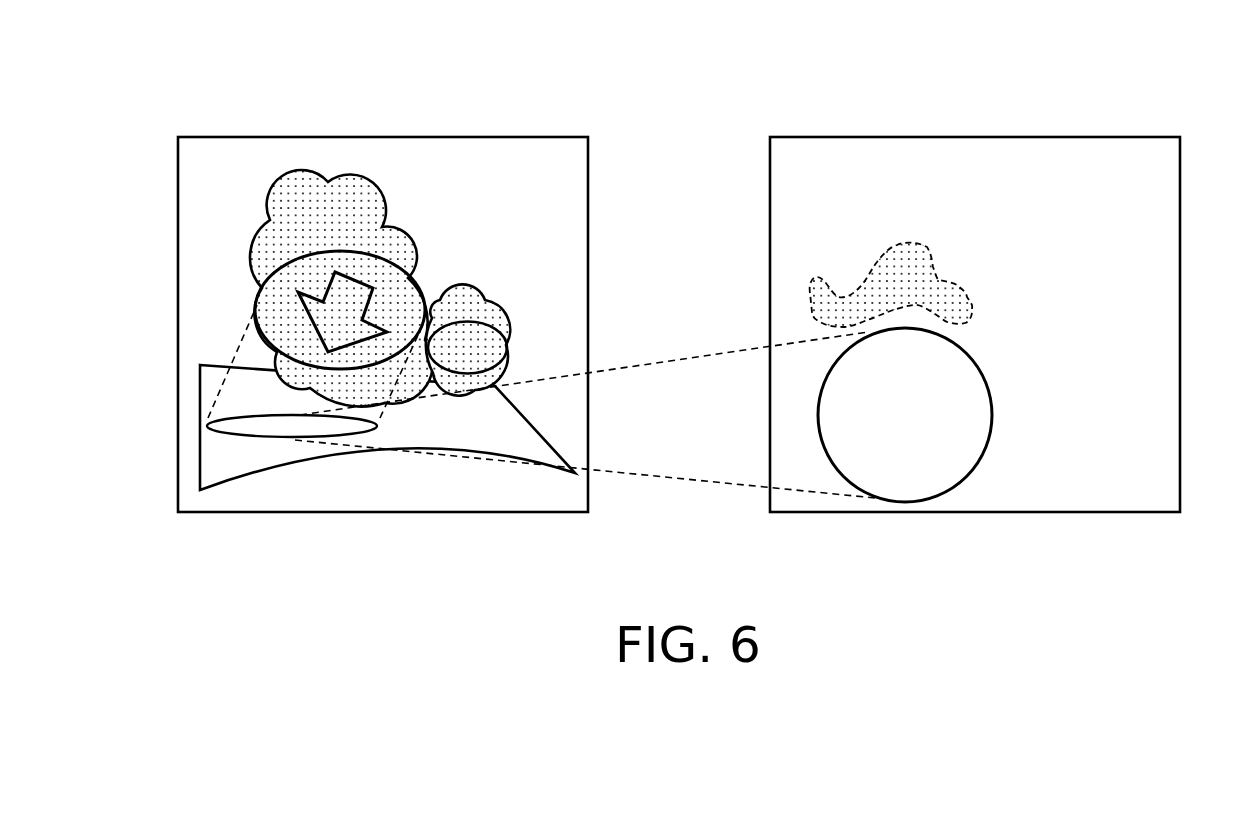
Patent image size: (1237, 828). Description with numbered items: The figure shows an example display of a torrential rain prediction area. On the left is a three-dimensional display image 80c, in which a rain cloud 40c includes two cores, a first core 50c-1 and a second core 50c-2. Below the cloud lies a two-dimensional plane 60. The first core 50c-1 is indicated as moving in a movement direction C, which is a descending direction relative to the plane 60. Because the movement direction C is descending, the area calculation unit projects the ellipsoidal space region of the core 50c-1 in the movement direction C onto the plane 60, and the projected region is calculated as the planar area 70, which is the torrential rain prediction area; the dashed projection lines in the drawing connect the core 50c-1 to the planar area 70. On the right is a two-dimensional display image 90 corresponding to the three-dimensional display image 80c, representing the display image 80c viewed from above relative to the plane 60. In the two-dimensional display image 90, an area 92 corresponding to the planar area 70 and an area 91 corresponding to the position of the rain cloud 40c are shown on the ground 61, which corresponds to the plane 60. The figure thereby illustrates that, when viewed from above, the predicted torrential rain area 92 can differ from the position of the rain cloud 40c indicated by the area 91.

The rain cloud 40c is at (298, 182).
The movement direction C is at (362, 277).
The 3D display image 80c is at (518, 137).
The core 50c-1 is at (397, 277).
The core 50c-2 is at (503, 334).
The 2D plane 60 is at (228, 462).
The planar area 70 is at (291, 432).
The 2D display image 90 is at (904, 137).
The area 91 is at (933, 258).
The area 92 is at (980, 412).
The ground 61 is at (1160, 292).